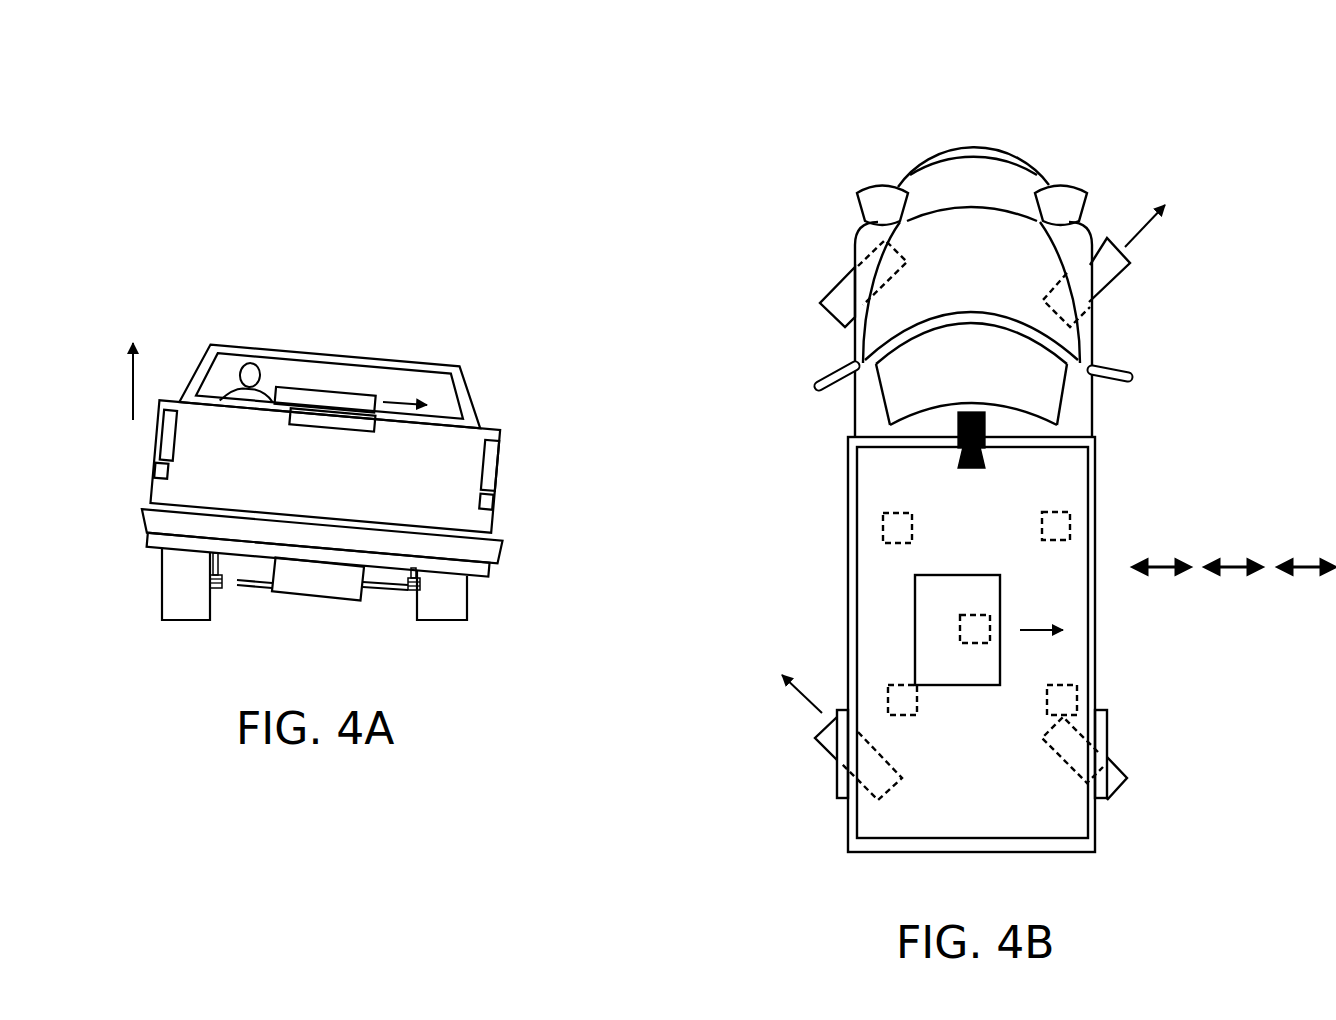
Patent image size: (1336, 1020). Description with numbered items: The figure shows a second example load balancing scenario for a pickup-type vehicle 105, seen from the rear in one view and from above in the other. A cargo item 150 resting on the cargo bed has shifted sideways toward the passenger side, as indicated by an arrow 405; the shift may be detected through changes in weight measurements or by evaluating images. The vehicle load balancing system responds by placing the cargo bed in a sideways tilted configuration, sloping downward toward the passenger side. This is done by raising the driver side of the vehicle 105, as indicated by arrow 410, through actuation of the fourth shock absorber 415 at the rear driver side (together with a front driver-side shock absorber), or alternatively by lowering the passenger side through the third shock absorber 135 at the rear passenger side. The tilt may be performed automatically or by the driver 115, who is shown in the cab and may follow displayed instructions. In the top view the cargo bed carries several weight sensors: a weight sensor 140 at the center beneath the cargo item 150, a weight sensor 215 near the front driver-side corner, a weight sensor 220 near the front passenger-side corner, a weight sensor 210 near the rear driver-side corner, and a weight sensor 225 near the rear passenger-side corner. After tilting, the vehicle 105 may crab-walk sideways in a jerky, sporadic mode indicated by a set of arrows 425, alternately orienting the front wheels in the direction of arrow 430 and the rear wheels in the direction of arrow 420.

In FIG. 4A, the vehicle 105 is at (467, 312).
In FIG. 4B, the vehicle 105 is at (1087, 110).
In FIG. 4A, the arrow 410 is at (128, 392).
In FIG. 4A, the driver 115 is at (265, 396).
In FIG. 4A, the cargo item 150 is at (320, 385).
In FIG. 4B, the cargo item 150 is at (978, 575).
In FIG. 4A, the arrow 405 is at (392, 402).
In FIG. 4B, the arrow 405 is at (1030, 628).
In FIG. 4A, the fourth shock absorber 415 is at (223, 576).
In FIG. 4A, the third shock absorber 135 is at (406, 581).
In FIG. 4B, the arrow 430 is at (1143, 237).
In FIG. 4B, the set of arrows 425 is at (1235, 538).
In FIG. 4B, the arrow 420 is at (810, 703).
In FIG. 4B, the weight sensor 215 is at (892, 512).
In FIG. 4B, the weight sensor 220 is at (1063, 512).
In FIG. 4B, the weight sensor 140 is at (972, 615).
In FIG. 4B, the weight sensor 210 is at (917, 703).
In FIG. 4B, the weight sensor 225 is at (1050, 700).